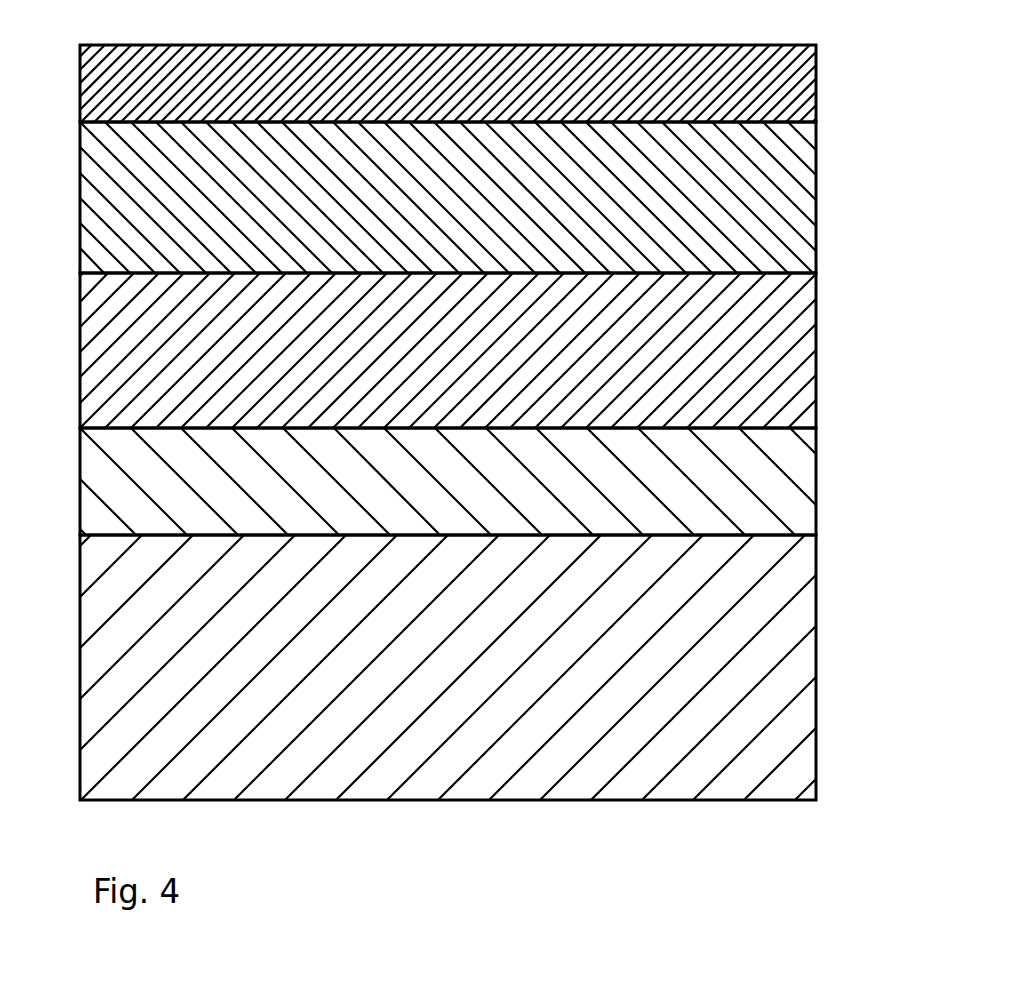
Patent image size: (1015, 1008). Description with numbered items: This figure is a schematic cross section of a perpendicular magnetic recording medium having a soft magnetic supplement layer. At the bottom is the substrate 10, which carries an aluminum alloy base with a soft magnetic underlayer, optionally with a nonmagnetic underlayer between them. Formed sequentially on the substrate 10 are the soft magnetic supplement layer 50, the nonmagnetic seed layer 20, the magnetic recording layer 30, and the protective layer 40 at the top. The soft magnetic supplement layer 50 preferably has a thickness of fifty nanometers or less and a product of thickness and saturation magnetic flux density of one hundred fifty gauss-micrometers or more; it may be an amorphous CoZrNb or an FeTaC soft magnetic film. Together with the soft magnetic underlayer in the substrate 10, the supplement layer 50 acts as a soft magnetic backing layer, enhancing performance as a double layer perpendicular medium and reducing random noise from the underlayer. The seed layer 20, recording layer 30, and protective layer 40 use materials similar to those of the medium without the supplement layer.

The protective layer 40 is at (792, 87).
The magnetic recording layer 30 is at (793, 213).
The nonmagnetic seed layer 20 is at (792, 357).
The soft magnetic supplement layer 50 is at (792, 480).
The substrate 10 is at (798, 685).